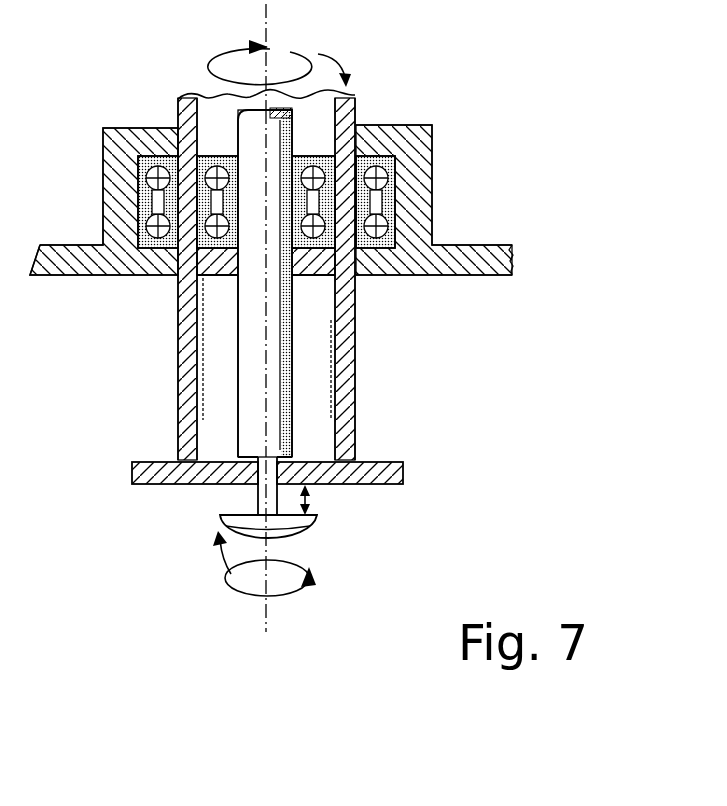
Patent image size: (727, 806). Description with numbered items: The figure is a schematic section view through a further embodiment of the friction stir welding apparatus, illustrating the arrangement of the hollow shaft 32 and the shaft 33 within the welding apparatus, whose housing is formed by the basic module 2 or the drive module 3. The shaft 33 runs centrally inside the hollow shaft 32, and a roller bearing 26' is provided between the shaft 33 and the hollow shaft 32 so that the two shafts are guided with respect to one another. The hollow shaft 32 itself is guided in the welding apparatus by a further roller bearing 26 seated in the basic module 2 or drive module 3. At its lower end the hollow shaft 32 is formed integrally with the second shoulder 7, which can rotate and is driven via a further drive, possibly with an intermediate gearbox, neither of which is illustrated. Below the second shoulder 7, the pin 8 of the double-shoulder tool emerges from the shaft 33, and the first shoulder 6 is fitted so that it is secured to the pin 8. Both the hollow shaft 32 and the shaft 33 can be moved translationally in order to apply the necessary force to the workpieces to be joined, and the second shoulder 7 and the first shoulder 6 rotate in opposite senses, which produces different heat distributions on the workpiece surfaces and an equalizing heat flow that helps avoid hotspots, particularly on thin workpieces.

The basic module 2 is at (104, 201).
The drive module 3 is at (445, 210).
The roller bearing 26 is at (330, 161).
The roller bearing 26' is at (318, 238).
The hollow shaft 32 is at (340, 367).
The shaft 33 is at (257, 353).
The second shoulder 7 is at (335, 484).
The pin 8 is at (262, 491).
The first shoulder 6 is at (303, 533).